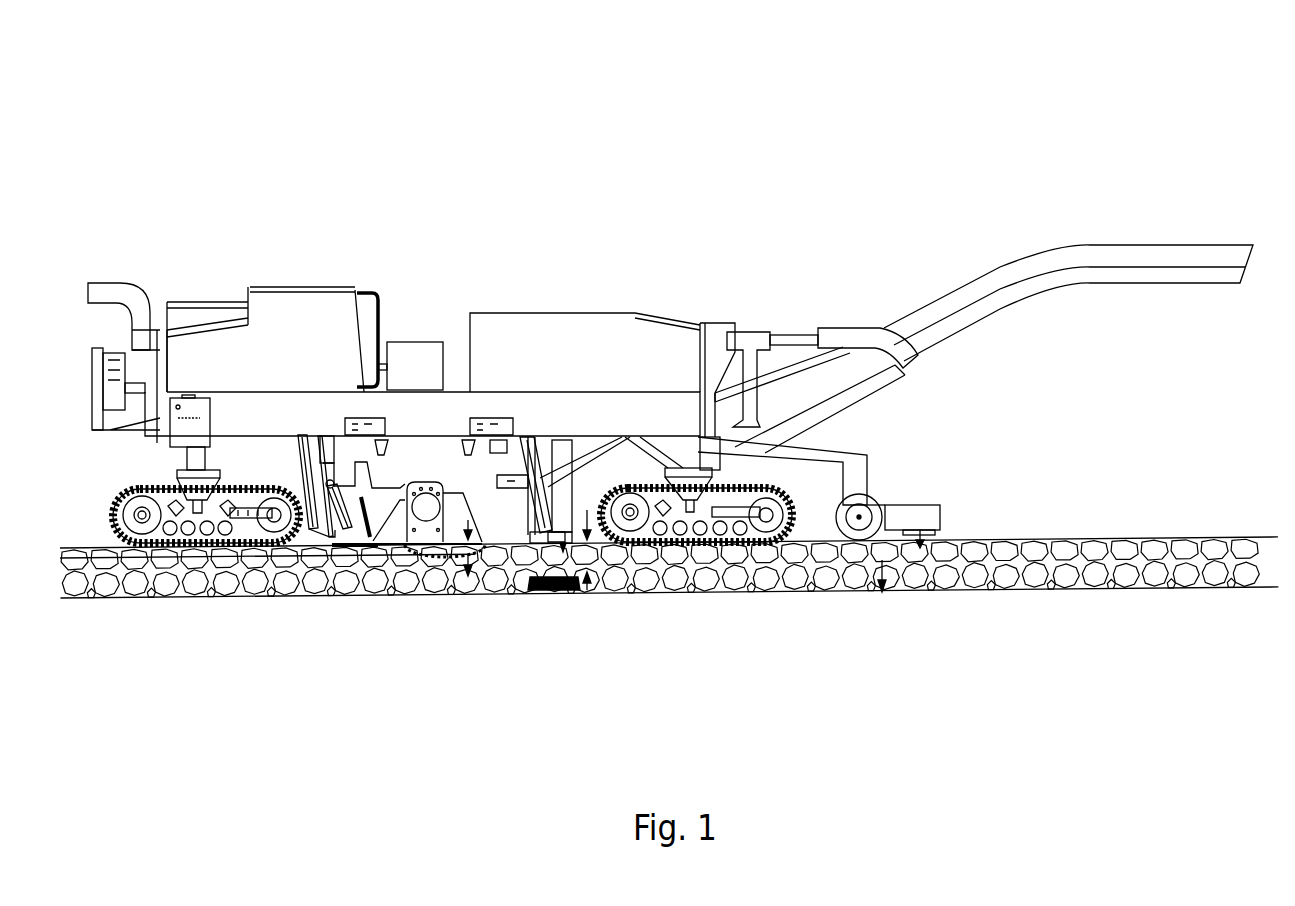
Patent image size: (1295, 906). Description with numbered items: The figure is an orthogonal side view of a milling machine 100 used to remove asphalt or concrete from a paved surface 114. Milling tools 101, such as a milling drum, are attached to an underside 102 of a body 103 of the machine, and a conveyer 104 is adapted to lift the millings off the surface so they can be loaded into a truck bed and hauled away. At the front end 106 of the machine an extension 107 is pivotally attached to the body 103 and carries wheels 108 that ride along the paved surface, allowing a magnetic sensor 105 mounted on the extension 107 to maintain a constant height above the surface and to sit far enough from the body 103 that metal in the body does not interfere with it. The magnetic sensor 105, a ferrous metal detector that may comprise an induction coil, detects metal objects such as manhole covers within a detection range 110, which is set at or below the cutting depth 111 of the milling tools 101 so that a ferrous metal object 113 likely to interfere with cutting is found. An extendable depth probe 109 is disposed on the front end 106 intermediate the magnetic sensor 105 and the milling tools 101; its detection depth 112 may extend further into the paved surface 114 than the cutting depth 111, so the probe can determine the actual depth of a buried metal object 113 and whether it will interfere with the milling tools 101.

The milling machine 100 is at (659, 361).
The milling tools 101 is at (403, 598).
The underside 102 is at (177, 480).
The body 103 is at (578, 410).
The conveyer 104 is at (1094, 257).
The magnetic sensor 105 is at (937, 547).
The front end 106 is at (727, 461).
The extension 107 is at (905, 491).
The wheels 108 is at (870, 508).
The extendable depth probe 109 is at (541, 536).
The detection range 110 is at (845, 562).
The cutting depth 111 is at (427, 597).
The detection depth 112 is at (588, 617).
The ferrous metal object 113 is at (552, 602).
The paved surface 114 is at (1140, 582).